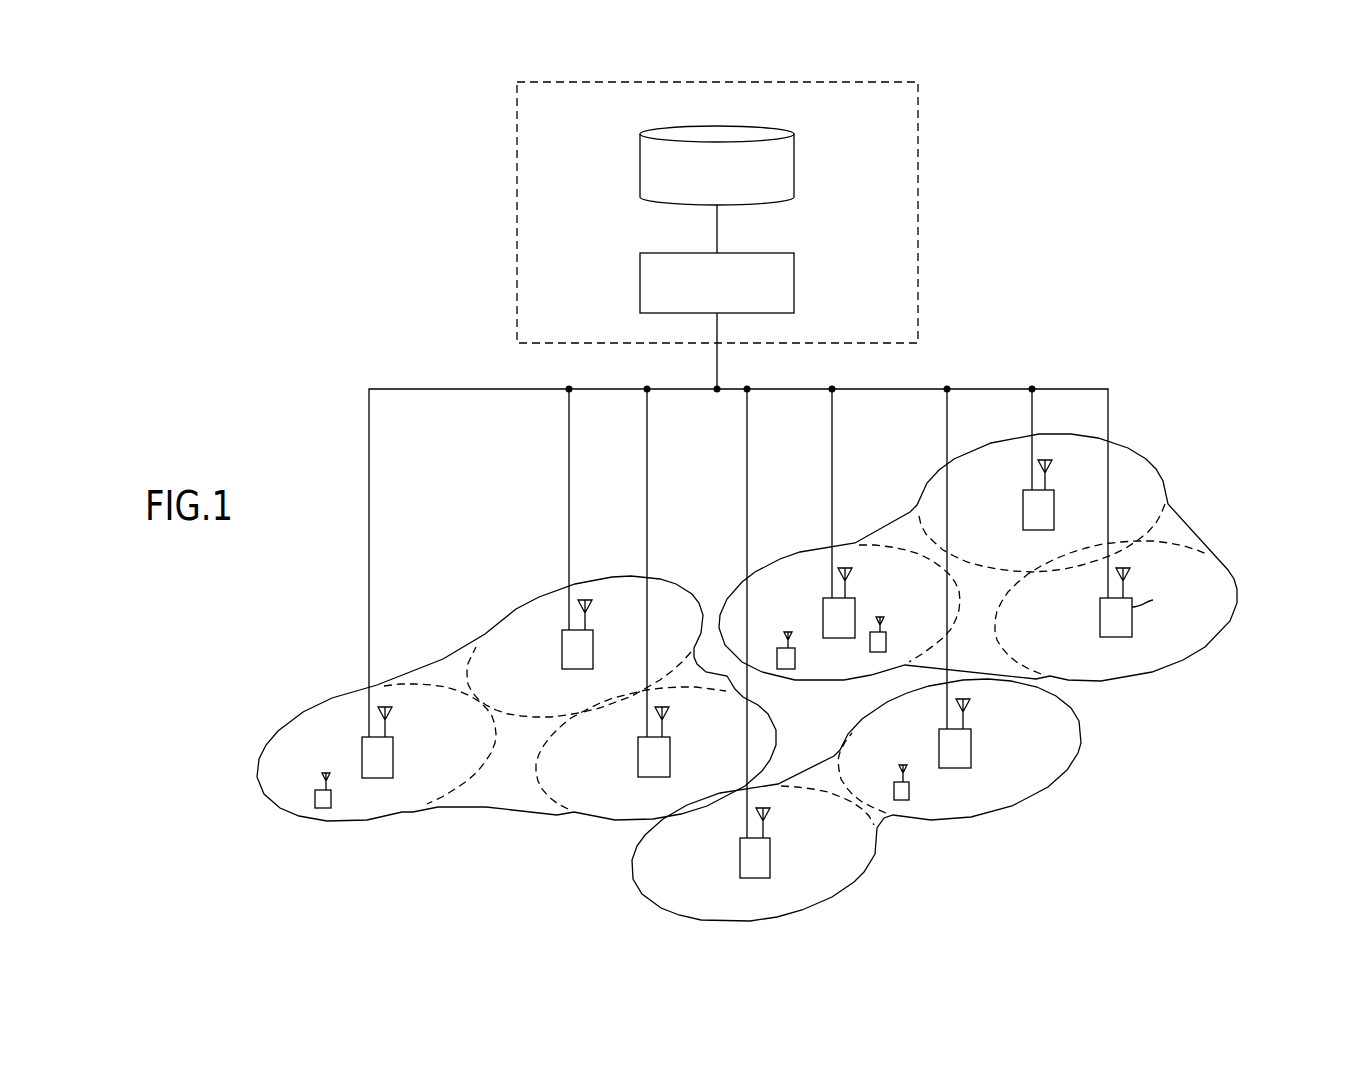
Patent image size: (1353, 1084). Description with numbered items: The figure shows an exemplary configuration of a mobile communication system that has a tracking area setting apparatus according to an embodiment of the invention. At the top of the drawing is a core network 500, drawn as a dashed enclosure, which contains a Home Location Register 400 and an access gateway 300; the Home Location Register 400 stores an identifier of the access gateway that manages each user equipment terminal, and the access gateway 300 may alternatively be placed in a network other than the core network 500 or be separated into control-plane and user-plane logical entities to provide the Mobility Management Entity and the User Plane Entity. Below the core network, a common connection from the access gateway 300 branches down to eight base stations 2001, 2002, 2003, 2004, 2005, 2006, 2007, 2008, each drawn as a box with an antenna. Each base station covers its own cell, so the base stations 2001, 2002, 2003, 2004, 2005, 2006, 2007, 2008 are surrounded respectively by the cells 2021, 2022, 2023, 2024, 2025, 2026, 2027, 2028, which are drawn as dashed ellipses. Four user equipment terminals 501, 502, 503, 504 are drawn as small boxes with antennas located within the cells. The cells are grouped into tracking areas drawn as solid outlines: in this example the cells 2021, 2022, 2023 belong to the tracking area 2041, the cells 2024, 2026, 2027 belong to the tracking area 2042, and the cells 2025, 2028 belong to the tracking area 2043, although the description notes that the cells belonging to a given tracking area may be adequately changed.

The core network 500 is at (918, 152).
The Home Location Register (HLR) 400 is at (794, 160).
The access gateway (aGW) 300 is at (794, 274).
The base station 2001 is at (393, 751).
The base station 2002 is at (562, 650).
The base station 2003 is at (670, 751).
The base station 2004 is at (878, 590).
The base station 2005 is at (971, 741).
The base station 2006 is at (1076, 490).
The base station 2007 is at (1143, 602).
The base station 2008 is at (770, 853).
The cell 2021 is at (460, 800).
The cell 2022 is at (449, 664).
The cell 2023 is at (540, 805).
The cell 2024 is at (882, 537).
The cell 2025 is at (933, 818).
The cell 2026 is at (926, 526).
The cell 2027 is at (1193, 540).
The cell 2028 is at (892, 846).
The tracking area 2041 is at (490, 814).
The tracking area 2042 is at (1173, 512).
The tracking area 2043 is at (1051, 775).
The user equipment terminal 501 is at (331, 798).
The user equipment terminal 502 is at (899, 777).
The user equipment terminal 503 is at (783, 646).
The user equipment terminal 504 is at (886, 639).